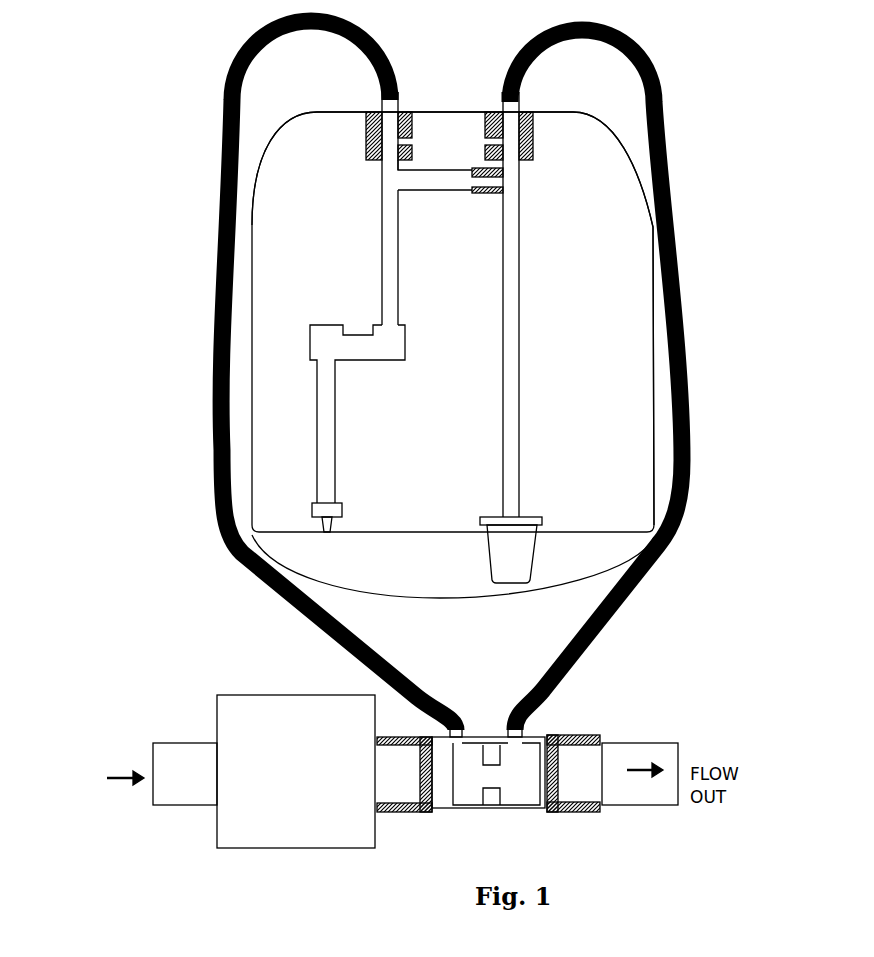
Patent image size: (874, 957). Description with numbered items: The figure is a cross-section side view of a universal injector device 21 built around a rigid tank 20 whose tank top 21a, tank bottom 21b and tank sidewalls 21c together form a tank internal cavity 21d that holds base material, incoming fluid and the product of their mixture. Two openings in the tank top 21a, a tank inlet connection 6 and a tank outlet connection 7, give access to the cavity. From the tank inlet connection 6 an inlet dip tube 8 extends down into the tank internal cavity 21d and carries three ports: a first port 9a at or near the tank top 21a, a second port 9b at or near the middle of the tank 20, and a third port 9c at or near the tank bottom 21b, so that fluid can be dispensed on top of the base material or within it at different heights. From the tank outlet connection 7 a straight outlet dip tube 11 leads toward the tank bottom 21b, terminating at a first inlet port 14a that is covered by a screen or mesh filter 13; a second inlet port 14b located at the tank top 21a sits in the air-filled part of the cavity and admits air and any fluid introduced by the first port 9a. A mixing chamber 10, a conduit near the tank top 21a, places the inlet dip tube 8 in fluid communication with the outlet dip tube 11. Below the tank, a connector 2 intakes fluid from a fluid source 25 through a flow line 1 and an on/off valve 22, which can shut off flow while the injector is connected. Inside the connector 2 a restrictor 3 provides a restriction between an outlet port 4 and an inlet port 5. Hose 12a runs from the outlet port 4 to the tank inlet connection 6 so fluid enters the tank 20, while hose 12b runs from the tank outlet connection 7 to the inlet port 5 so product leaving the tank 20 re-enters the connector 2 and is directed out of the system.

The flow line 1 is at (415, 774).
The connector 2 is at (488, 788).
The restrictor 3 is at (481, 775).
The outlet port 4 is at (436, 722).
The inlet port 5 is at (535, 722).
The tank inlet connection 6 is at (373, 97).
The tank outlet connection 7 is at (529, 97).
The inlet dip tube 8 is at (373, 218).
The first port 9a is at (449, 136).
The second port 9b is at (357, 398).
The third port 9c is at (305, 512).
The mixing chamber 10 is at (482, 194).
The outlet dip tube 11 is at (533, 314).
The hose 12a is at (308, 375).
The hose 12b is at (619, 380).
The filter 13 is at (493, 554).
The first inlet port 14a is at (529, 505).
The second inlet port 14b is at (441, 166).
The tank 20 is at (241, 257).
The universal injector device 21 is at (445, 84).
The tank top 21a is at (335, 103).
The tank bottom 21b is at (357, 540).
The tank sidewalls 21c is at (650, 357).
The tank internal cavity 21d is at (447, 423).
The valve 22 is at (296, 771).
The fluid source 25 is at (85, 772).